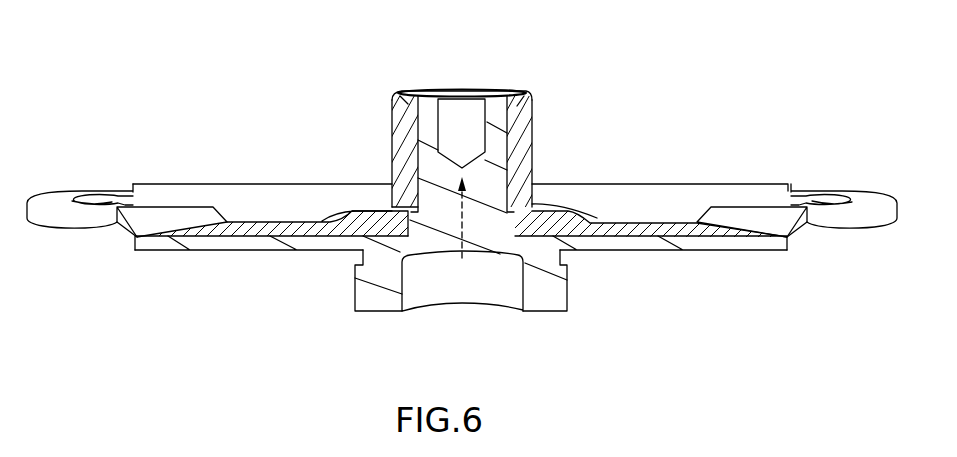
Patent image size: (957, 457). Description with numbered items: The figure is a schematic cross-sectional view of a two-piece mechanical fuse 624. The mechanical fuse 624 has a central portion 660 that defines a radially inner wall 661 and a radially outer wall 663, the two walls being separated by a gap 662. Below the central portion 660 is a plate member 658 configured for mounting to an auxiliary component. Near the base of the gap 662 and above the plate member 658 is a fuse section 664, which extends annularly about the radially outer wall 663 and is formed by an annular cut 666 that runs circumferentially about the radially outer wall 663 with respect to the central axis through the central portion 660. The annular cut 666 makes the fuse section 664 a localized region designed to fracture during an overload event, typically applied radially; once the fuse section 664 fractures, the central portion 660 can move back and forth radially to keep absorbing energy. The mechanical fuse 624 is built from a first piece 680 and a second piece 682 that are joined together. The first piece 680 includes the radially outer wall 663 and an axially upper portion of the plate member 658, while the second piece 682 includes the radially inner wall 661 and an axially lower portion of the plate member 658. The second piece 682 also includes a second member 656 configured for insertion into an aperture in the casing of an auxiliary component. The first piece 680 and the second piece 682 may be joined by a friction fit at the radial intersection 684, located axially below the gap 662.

The mechanical fuse 624 is at (286, 108).
The second member 656 is at (547, 303).
The plate member 658 is at (850, 222).
The central portion 660 is at (432, 103).
The radially inner wall 661 is at (493, 108).
The gap 662 is at (407, 91).
The radially outer wall 663 is at (523, 115).
The fuse section 664 is at (403, 213).
The annular cut 666 is at (389, 200).
The first piece 680 is at (641, 197).
The second piece 682 is at (675, 250).
The radial intersection 684 is at (406, 216).